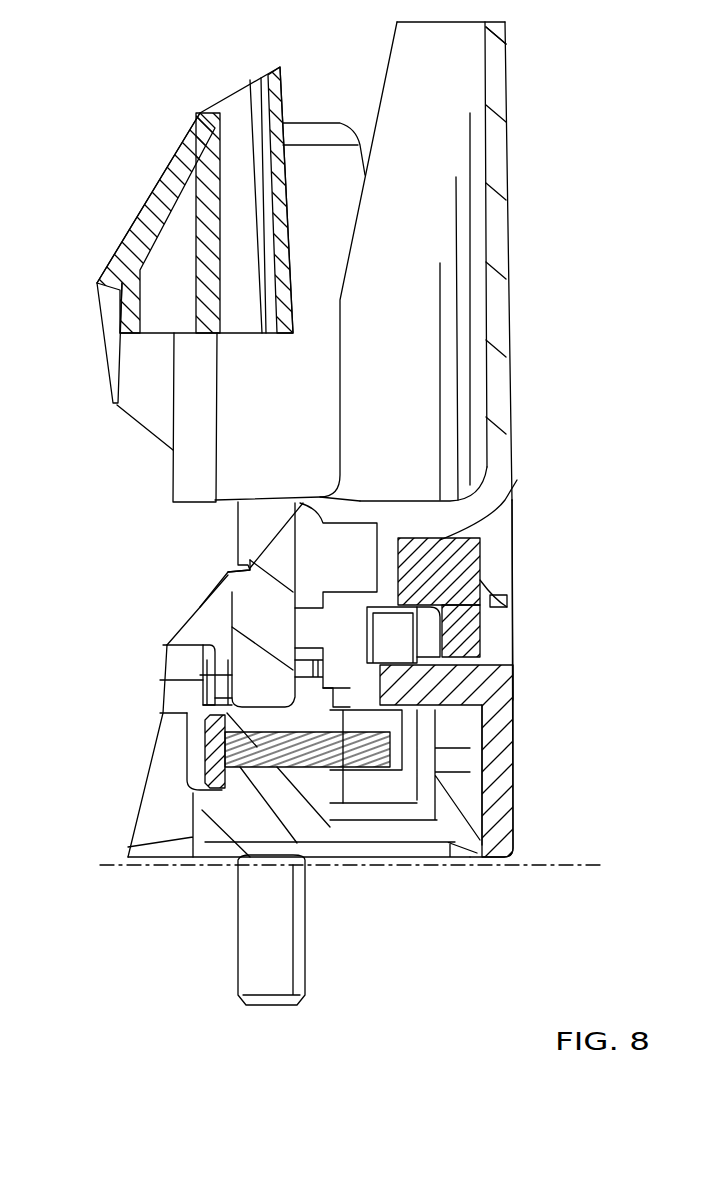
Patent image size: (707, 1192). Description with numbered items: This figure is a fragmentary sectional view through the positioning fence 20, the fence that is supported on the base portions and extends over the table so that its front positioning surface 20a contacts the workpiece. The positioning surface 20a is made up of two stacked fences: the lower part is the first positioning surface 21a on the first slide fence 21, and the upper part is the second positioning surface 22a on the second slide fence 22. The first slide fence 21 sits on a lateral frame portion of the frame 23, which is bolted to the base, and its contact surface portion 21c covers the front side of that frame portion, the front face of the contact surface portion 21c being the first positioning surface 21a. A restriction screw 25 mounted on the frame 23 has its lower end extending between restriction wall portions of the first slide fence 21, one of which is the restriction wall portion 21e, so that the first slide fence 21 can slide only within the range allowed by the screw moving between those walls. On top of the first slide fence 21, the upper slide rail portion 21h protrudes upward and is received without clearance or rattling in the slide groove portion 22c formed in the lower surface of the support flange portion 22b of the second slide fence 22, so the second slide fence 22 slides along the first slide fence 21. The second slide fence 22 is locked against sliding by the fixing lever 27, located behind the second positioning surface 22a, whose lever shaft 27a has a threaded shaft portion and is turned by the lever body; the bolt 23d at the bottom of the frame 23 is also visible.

The positioning fence 20 is at (547, 125).
The positioning surface 20a is at (515, 525).
The first slide fence 21 is at (480, 663).
The first positioning surface 21a is at (513, 730).
The contact surface portion 21c is at (503, 797).
The restriction wall portion 21e is at (363, 717).
The upper slide rail portion 21h is at (460, 553).
The second slide fence 22 is at (433, 230).
The second positioning surface 22a is at (507, 302).
The support flange portion 22b is at (365, 503).
The slide groove portion 22c is at (440, 537).
The frame 23 is at (250, 797).
The bracket bolt 23d is at (295, 943).
The restriction screw 25 is at (403, 710).
The fixing lever 27 is at (146, 395).
The lever shaft 27a is at (255, 528).